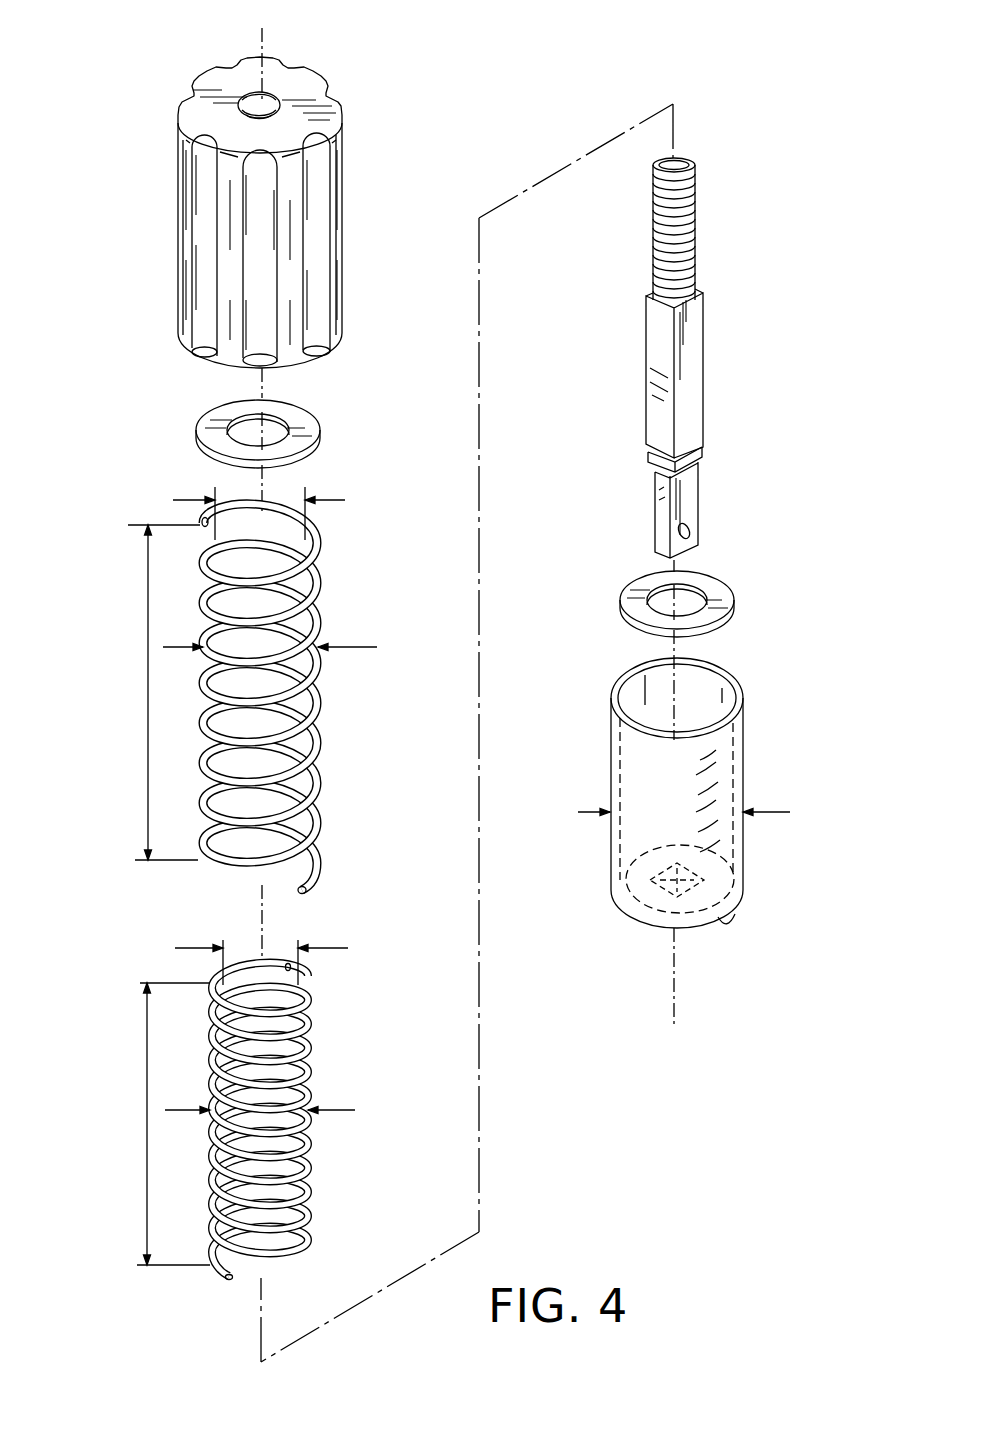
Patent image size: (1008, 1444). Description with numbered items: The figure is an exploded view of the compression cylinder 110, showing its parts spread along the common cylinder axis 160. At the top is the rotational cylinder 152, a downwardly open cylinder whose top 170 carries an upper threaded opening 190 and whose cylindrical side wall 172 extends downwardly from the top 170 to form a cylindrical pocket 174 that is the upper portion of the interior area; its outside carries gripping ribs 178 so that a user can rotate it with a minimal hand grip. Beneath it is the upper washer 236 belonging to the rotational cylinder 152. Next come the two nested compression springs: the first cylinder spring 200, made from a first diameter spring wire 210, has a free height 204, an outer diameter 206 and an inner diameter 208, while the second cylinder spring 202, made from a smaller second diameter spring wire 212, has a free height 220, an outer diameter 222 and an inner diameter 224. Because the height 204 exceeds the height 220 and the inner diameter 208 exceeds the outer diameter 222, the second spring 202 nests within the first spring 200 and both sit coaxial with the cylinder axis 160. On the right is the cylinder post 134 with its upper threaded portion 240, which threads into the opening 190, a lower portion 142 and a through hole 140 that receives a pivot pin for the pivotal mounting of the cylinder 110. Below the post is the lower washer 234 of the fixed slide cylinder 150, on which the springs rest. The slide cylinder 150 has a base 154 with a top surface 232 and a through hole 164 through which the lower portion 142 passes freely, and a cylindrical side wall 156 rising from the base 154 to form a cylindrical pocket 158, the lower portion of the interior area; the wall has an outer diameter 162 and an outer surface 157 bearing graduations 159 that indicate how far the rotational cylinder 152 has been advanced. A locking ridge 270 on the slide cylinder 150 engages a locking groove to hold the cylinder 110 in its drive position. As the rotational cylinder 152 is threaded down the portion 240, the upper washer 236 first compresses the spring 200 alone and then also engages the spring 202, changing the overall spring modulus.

The compression cylinder 110 is at (464, 688).
The cylinder axis 160 is at (258, 40).
The top 170 is at (322, 90).
The rotational cylinder 152 is at (258, 205).
The upper threaded opening 190 is at (238, 108).
The gripping ribs 178 is at (292, 223).
The cylindrical side wall 172 is at (205, 257).
The cylindrical pocket 174 is at (222, 368).
The upper washer 236 is at (300, 405).
The first cylinder spring 200 is at (320, 699).
The first diameter spring wire 210 is at (313, 543).
The inner diameter 208 is at (178, 497).
The free or uncompressed height 204 is at (147, 692).
The outer diameter 206 is at (345, 648).
The second cylinder spring 202 is at (322, 1121).
The second diameter spring wire 212 is at (307, 1020).
The inner diameter 224 is at (185, 947).
The free or uncompressed height 220 is at (147, 1137).
The outer diameter 222 is at (345, 1111).
The cylinder post 134 is at (736, 308).
The upper threaded portion 240 is at (683, 235).
The lower portion 142 is at (695, 487).
The through hole 140 is at (690, 530).
The lower washer 234 is at (725, 597).
The fixed slide cylinder 150 is at (686, 792).
The cylindrical side wall 156 is at (628, 740).
The cylindrical pocket 158 is at (655, 690).
The outer surface 157 is at (640, 790).
The base 154 is at (630, 910).
The locking ridge 270 is at (725, 922).
The top surface 232 is at (625, 858).
The through hole 164 is at (740, 858).
The graduations 159 is at (735, 758).
The outer diameter 162 is at (783, 812).